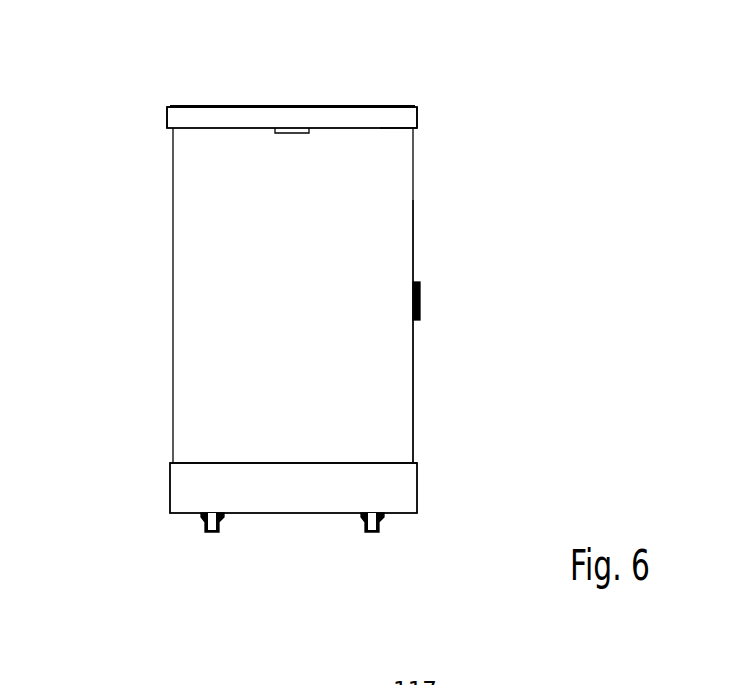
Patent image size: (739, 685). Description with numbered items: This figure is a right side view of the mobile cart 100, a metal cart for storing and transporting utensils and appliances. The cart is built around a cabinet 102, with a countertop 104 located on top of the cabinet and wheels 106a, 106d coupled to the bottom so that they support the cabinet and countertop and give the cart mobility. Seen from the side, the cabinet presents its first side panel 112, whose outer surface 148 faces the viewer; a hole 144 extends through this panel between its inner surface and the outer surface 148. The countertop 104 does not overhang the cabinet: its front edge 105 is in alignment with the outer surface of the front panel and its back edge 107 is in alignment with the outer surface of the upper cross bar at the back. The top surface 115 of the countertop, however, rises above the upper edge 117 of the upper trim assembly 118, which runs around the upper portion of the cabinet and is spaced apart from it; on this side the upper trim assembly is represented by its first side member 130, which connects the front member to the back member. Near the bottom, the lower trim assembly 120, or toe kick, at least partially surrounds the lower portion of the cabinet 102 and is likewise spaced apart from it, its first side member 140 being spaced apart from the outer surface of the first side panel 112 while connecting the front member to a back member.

The mobile cart 100 is at (558, 114).
The cabinet 102 is at (142, 325).
The countertop 104 is at (345, 80).
The front edge 105 is at (170, 105).
The wheel 106a is at (210, 533).
The wheel 106d is at (383, 532).
The back edge 107 is at (414, 105).
The first side panel 112 is at (385, 398).
The top surface 115 is at (220, 105).
The upper edge 117 is at (187, 105).
The upper trim assembly 118 is at (413, 153).
The lower trim assembly 120 is at (368, 441).
The first side member 130 is at (322, 121).
The first side member 140 is at (276, 503).
The hole 144 is at (283, 140).
The outer surface 148 is at (305, 255).